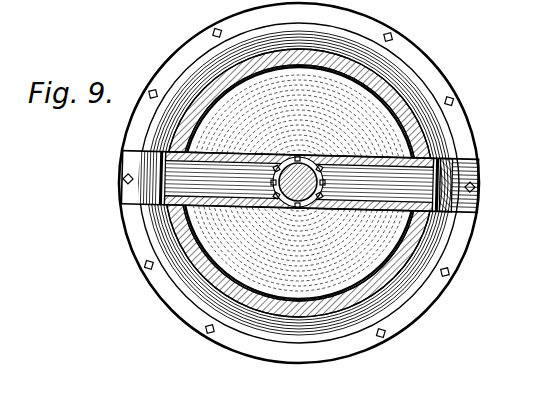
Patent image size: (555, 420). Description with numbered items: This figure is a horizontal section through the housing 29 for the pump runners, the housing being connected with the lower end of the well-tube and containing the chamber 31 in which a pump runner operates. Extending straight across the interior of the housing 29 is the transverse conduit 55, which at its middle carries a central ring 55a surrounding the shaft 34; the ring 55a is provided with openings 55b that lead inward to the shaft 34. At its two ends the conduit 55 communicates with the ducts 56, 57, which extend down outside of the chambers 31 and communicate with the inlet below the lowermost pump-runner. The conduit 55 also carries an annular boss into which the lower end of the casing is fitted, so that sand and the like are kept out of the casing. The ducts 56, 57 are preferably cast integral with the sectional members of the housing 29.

The housing 29 is at (404, 253).
The chamber 31 is at (275, 284).
The shaft 34 is at (303, 178).
The transverse conduit 55 is at (374, 178).
The central ring 55a is at (335, 186).
The openings 55b is at (282, 201).
The duct 56 is at (162, 174).
The duct 57 is at (441, 187).